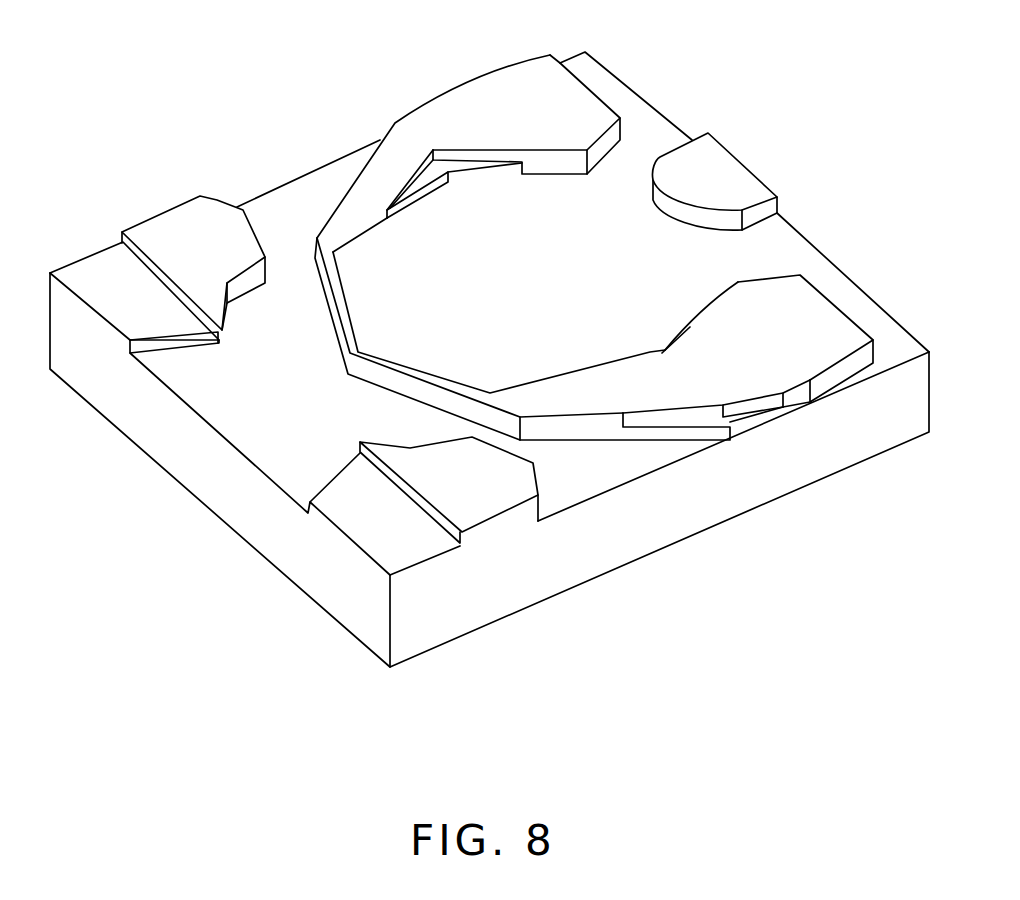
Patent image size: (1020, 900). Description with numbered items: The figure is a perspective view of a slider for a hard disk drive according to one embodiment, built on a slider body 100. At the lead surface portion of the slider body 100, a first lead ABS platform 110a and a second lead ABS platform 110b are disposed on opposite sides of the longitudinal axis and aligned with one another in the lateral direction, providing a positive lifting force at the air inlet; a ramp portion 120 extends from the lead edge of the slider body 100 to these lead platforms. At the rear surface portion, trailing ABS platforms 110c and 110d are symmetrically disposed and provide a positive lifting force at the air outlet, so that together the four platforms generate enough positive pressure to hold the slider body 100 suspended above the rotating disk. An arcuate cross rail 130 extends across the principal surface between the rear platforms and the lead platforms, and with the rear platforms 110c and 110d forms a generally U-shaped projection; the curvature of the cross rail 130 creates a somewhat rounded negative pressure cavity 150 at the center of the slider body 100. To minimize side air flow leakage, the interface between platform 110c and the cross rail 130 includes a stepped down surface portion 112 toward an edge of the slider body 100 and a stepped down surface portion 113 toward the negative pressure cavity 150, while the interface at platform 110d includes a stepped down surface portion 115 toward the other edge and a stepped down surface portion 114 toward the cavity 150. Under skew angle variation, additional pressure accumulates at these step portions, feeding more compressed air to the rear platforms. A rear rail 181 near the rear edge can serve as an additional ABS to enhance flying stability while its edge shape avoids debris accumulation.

The slider body 100 is at (310, 162).
The first lead ABS platform 110a is at (207, 235).
The second lead ABS platform 110b is at (457, 487).
The trailing ABS platform 110c is at (540, 97).
The trailing ABS platform 110d is at (777, 307).
The stepped down surface portion 112 is at (397, 123).
The stepped down surface portion 113 is at (445, 172).
The stepped down surface portion 114 is at (653, 348).
The stepped down surface portion 115 is at (737, 412).
The ramp portion 120 is at (118, 288).
The arcuate cross rail 130 is at (340, 297).
The negative pressure cavity 150 is at (440, 318).
The rear rail 181 is at (723, 188).